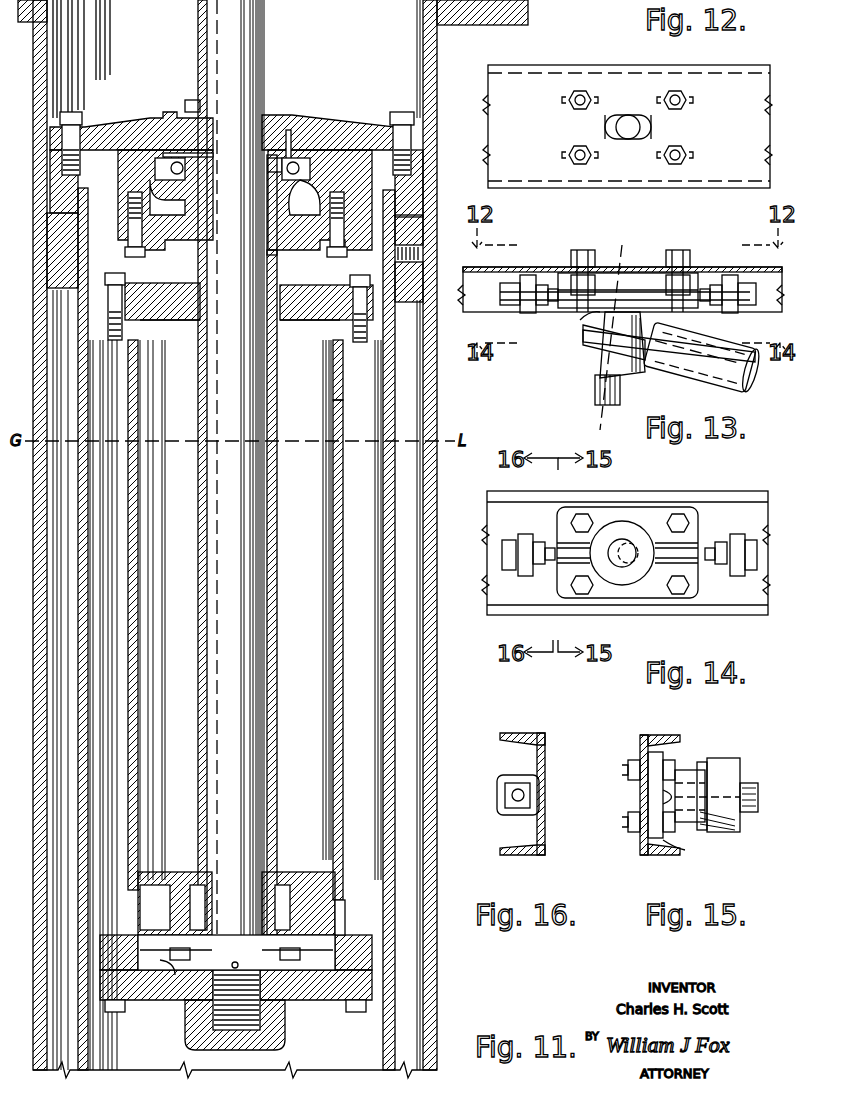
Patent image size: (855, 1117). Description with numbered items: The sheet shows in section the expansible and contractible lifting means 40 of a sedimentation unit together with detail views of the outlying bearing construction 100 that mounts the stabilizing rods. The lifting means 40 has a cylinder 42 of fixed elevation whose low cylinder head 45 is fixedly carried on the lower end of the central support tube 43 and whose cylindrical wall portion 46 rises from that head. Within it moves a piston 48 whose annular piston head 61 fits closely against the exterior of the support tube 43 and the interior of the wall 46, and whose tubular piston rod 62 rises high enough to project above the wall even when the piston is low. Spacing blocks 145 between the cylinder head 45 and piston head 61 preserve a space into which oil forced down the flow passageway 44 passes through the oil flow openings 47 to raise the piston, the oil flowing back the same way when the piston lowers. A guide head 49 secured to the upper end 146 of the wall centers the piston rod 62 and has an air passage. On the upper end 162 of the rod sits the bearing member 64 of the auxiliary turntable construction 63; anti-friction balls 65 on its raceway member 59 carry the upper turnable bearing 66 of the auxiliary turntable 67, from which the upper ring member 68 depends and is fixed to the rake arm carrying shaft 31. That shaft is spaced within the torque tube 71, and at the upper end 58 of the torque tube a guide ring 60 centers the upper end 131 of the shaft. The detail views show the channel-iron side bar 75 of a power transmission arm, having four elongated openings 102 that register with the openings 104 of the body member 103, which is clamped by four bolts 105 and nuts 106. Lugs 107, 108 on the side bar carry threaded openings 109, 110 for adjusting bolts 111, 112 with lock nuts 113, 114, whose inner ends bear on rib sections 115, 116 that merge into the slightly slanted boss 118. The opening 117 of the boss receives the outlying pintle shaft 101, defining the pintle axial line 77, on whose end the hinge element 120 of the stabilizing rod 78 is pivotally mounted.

In FIG. 11, the rake arm carrying shaft 31 is at (145, 262).
In FIG. 11, the expansible and contractible lifting means 40 is at (342, 785).
In FIG. 11, the cylinder 42 is at (335, 905).
In FIG. 11, the central support tube 43 is at (205, 615).
In FIG. 11, the flow passageway 44 is at (232, 645).
In FIG. 11, the cylinder head 45 is at (348, 1000).
In FIG. 11, the cylindrical wall portion 46 is at (346, 950).
In FIG. 11, the oil flow openings 47 is at (235, 960).
In FIG. 11, the piston 48 is at (332, 786).
In FIG. 11, the guide head 49 is at (295, 315).
In FIG. 11, the upper end of torque tube 58 is at (33, 25).
In FIG. 11, the raceway member 59 is at (280, 158).
In FIG. 11, the guide ring 60 is at (55, 262).
In FIG. 11, the piston head 61 is at (308, 890).
In FIG. 11, the tubular piston rod 62 is at (277, 705).
In FIG. 11, the auxiliary turntable construction 63 is at (142, 95).
In FIG. 11, the bearing member 64 is at (282, 192).
In FIG. 11, the anti-friction balls 65 is at (291, 150).
In FIG. 11, the upper turnable bearing 66 is at (305, 170).
In FIG. 11, the auxiliary turntable 67 is at (125, 124).
In FIG. 11, the upper ring member 68 is at (50, 192).
In FIG. 11, the torque tube 71 is at (33, 412).
In FIG. 12, the channel-iron side bar 75 is at (606, 65).
In FIG. 13, the channel-iron side bar 75 is at (620, 268).
In FIG. 14, the channel-iron side bar 75 is at (735, 495).
In FIG. 15, the channel-iron side bar 75 is at (660, 795).
In FIG. 16, the channel-iron side bar 75 is at (518, 733).
In FIG. 13, the outlying pintle axial line 77 is at (602, 418).
In FIG. 13, the stabilizing rod 78 is at (722, 380).
In FIG. 12, the bracket assembly 100 is at (635, 70).
In FIG. 13, the bracket assembly 100 is at (575, 385).
In FIG. 14, the bracket assembly 100 is at (508, 634).
In FIG. 15, the bracket assembly 100 is at (710, 862).
In FIG. 12, the outlying pintle shaft 101 is at (628, 118).
In FIG. 13, the outlying pintle shaft 101 is at (598, 380).
In FIG. 15, the outlying pintle shaft 101 is at (750, 783).
In FIG. 12, the bolt-receiving elongated openings 102 is at (658, 132).
In FIG. 13, the body member 103 is at (575, 308).
In FIG. 14, the body member 103 is at (565, 600).
In FIG. 15, the body member 103 is at (660, 840).
In FIG. 13, the bolt-receiving openings 104 is at (590, 254).
In FIG. 12, the bolts 105 is at (570, 154).
In FIG. 13, the bolts 105 is at (578, 262).
In FIG. 14, the bolts 105 is at (583, 518).
In FIG. 15, the bolts 105 is at (620, 822).
In FIG. 12, the nuts 106 is at (580, 150).
In FIG. 13, the nuts 106 is at (571, 264).
In FIG. 15, the nuts 106 is at (628, 820).
In FIG. 13, the lug 107 is at (526, 315).
In FIG. 14, the lug 107 is at (522, 538).
In FIG. 16, the lug 107 is at (514, 776).
In FIG. 13, the lug 108 is at (730, 312).
In FIG. 14, the lug 108 is at (730, 540).
In FIG. 14, the screw-threaded opening 109 is at (524, 576).
In FIG. 14, the screw-threaded opening 110 is at (736, 576).
In FIG. 13, the adjusting and positioning bolt 111 is at (510, 308).
In FIG. 14, the adjusting and positioning bolt 111 is at (502, 553).
In FIG. 16, the adjusting and positioning bolt 111 is at (516, 803).
In FIG. 13, the adjusting and positioning bolt 112 is at (748, 285).
In FIG. 14, the adjusting and positioning bolt 112 is at (757, 553).
In FIG. 14, the lock nut 113 is at (540, 565).
In FIG. 16, the lock nut 113 is at (505, 795).
In FIG. 14, the lock nut 114 is at (720, 565).
In FIG. 14, the rib section 115 is at (568, 548).
In FIG. 15, the rib section 115 is at (675, 790).
In FIG. 14, the rib section 116 is at (685, 548).
In FIG. 13, the opening 117 is at (628, 312).
In FIG. 14, the opening 117 is at (622, 570).
In FIG. 15, the opening 117 is at (721, 773).
In FIG. 13, the boss 118 is at (586, 330).
In FIG. 14, the boss 118 is at (625, 523).
In FIG. 15, the boss 118 is at (705, 825).
In FIG. 13, the hinge element 120 is at (638, 370).
In FIG. 11, the upper end of rake arm carrying shaft 131 is at (90, 228).
In FIG. 11, the spacing blocks 145 is at (170, 965).
In FIG. 11, the upper end of cylindrical wall 146 is at (333, 348).
In FIG. 11, the upper end of tubular piston rod 162 is at (272, 248).